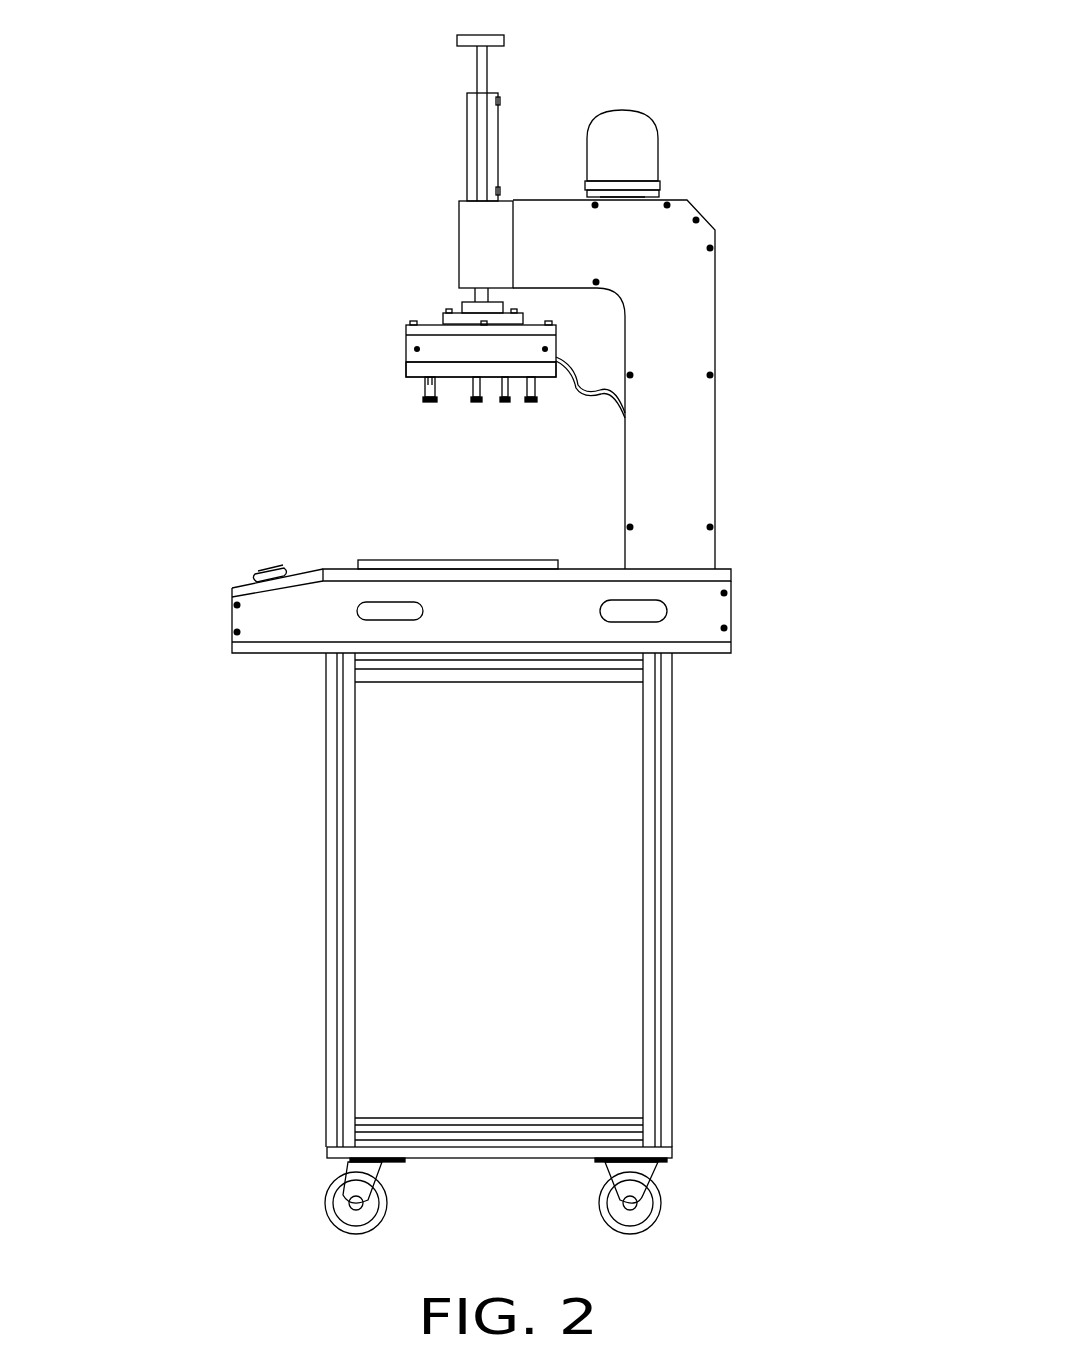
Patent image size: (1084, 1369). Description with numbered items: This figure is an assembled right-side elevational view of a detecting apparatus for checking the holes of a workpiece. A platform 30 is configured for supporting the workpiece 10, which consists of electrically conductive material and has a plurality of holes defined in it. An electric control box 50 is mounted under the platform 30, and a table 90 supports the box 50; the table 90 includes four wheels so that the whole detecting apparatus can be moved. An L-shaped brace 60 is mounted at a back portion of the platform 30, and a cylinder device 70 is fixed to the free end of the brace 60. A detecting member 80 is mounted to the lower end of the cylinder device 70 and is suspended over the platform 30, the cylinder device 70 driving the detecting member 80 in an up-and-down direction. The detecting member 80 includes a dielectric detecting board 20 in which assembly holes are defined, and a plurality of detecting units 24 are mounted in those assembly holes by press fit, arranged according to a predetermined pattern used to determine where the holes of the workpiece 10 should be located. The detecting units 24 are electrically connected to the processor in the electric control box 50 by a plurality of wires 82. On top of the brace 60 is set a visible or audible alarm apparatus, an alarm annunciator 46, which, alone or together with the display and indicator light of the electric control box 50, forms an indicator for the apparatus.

The workpiece 10 is at (482, 558).
The detecting board 20 is at (413, 368).
The detecting units 24 is at (477, 402).
The platform 30 is at (347, 563).
The alarm annunciator 46 is at (623, 123).
The electric control box 50 is at (703, 632).
The L-shaped brace 60 is at (705, 323).
The cylinder device 70 is at (442, 248).
The detecting member 80 is at (385, 340).
The wires 82 is at (578, 383).
The table 90 is at (673, 913).